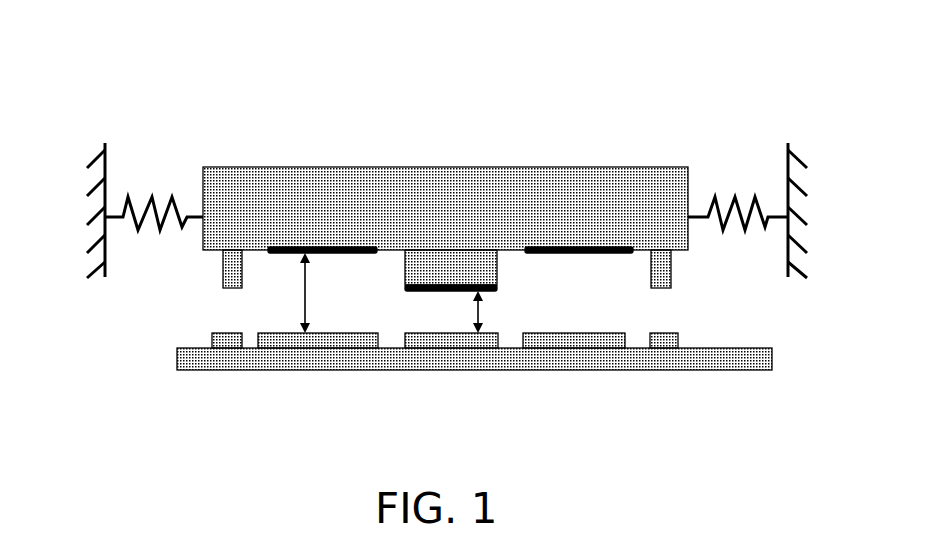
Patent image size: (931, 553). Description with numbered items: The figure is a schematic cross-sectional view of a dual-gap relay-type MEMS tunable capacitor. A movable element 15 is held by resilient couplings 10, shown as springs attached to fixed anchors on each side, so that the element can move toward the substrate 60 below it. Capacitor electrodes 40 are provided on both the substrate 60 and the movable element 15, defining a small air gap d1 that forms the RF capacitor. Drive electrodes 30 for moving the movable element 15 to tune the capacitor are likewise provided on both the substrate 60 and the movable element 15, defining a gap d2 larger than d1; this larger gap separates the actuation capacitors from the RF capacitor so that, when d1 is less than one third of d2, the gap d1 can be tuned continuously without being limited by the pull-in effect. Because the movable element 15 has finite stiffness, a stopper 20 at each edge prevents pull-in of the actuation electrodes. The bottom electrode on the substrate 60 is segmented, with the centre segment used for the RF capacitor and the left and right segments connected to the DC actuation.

The resilient couplings 10 is at (162, 197).
The movable element 15 is at (558, 188).
The stopper 20 is at (229, 297).
The drive electrodes 30 is at (541, 240).
The capacitor electrodes 40 is at (421, 305).
The substrate 60 is at (570, 365).
The gap d1 is at (470, 312).
The gap d2 is at (300, 313).